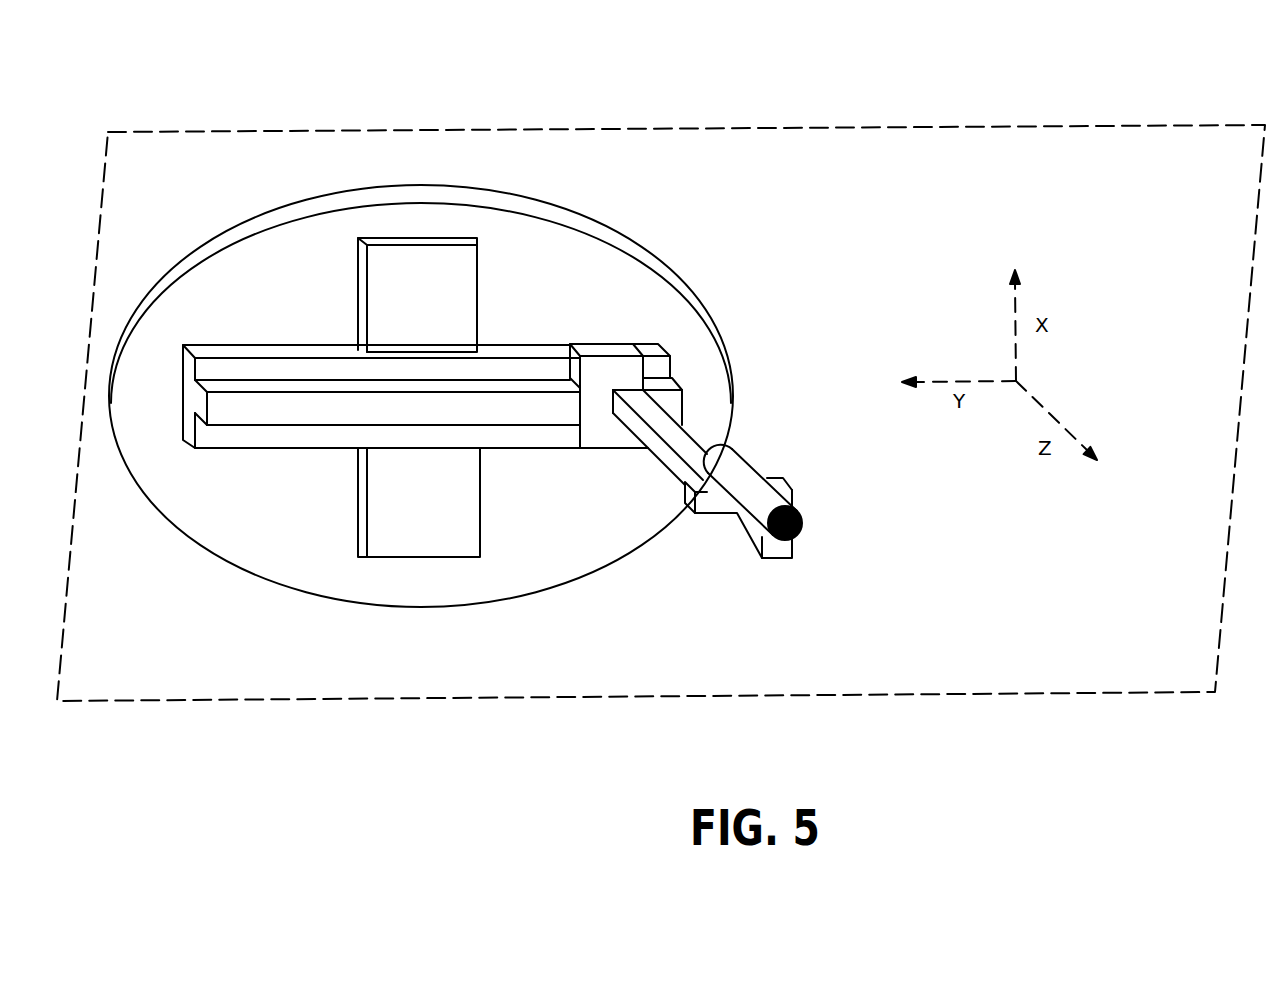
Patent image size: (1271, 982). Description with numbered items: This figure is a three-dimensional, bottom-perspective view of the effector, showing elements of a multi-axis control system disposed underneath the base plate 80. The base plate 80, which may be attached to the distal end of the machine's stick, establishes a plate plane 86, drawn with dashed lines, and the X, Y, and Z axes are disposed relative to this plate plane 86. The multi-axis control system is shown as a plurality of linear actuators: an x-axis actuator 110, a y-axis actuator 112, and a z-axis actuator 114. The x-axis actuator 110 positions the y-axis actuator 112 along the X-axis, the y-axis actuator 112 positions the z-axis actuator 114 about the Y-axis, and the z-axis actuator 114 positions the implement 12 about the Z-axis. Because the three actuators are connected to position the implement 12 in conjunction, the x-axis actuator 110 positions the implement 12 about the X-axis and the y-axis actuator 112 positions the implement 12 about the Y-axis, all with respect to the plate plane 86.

The implement 12 is at (750, 498).
The base plate 80 is at (372, 188).
The plate plane 86 is at (873, 125).
The x-axis actuator 110 is at (460, 278).
The y-axis actuator 112 is at (608, 380).
The z-axis actuator 114 is at (777, 477).